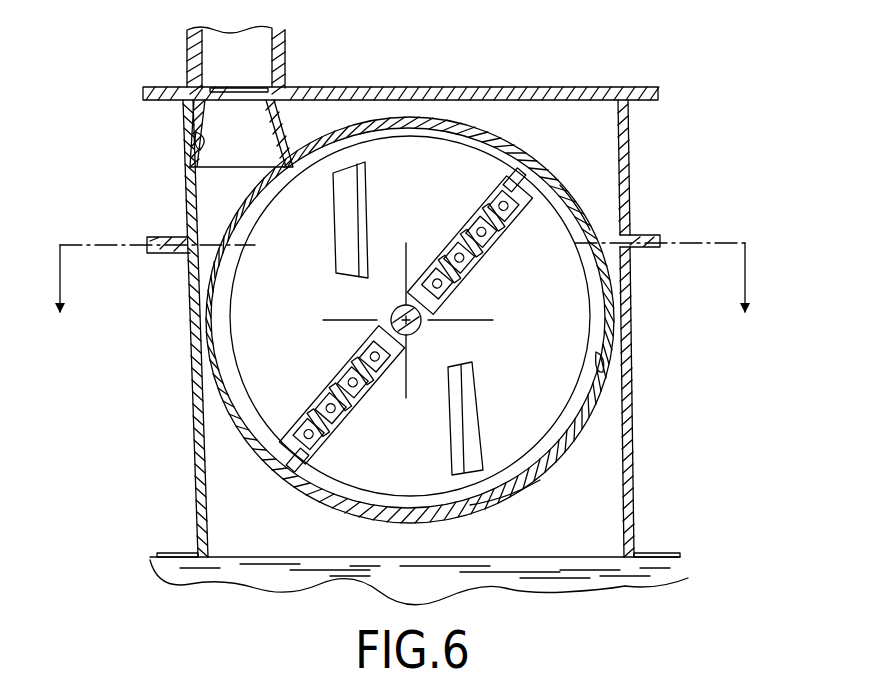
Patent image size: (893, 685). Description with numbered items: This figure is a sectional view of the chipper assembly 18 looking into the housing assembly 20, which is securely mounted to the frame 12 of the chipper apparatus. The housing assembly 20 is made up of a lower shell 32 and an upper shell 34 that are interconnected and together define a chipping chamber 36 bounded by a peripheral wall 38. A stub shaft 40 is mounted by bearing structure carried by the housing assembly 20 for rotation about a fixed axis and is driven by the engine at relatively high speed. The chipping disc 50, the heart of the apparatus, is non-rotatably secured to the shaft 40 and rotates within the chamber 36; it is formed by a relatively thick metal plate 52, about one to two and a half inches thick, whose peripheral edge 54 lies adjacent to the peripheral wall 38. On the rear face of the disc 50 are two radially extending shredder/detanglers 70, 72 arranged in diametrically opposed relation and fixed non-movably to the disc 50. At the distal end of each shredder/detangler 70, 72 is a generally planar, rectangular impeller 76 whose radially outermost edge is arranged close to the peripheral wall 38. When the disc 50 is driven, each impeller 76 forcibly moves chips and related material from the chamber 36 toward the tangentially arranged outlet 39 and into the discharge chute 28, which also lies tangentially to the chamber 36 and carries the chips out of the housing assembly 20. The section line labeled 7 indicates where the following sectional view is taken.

The section line 7- 7 is at (403, 271).
The frame 12 is at (538, 572).
The chipper assembly 18 is at (150, 430).
The housing assembly 20 is at (730, 167).
The discharge chute 28 is at (283, 45).
The lower shell 32 is at (632, 445).
The upper shell 34 is at (628, 128).
The chipping chamber 36 is at (604, 368).
The peripheral wall 38 is at (513, 494).
The outlet 39 is at (197, 143).
The stub shaft 40 is at (422, 330).
The chipping disc 50 is at (334, 486).
The metal plate 52 is at (450, 173).
The peripheral edge 54 is at (552, 207).
The shredder/detangler 70 is at (450, 228).
The shredder/detangler 72 is at (347, 434).
The impeller 76 is at (523, 192).